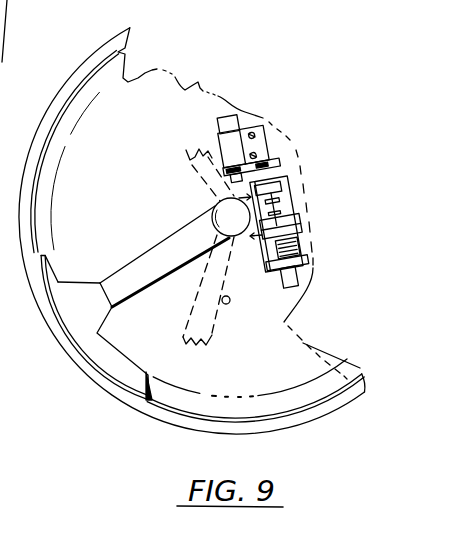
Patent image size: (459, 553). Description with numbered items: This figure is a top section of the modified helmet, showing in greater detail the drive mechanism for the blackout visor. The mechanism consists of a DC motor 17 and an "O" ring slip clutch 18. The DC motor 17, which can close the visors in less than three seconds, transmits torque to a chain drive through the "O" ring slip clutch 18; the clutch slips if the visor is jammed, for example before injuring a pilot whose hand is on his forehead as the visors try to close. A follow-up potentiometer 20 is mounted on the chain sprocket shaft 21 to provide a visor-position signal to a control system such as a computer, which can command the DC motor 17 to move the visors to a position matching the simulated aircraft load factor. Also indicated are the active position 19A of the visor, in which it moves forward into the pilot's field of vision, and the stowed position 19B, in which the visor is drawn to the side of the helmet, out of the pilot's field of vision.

The DC motor 17 is at (238, 119).
The "O" ring slip clutch 18 is at (274, 164).
The active position of the visor 19A is at (117, 383).
The stowed position of the visor 19B is at (190, 158).
The follow-up potentiometer 20 is at (300, 277).
The chain sprocket shaft 21 is at (283, 208).